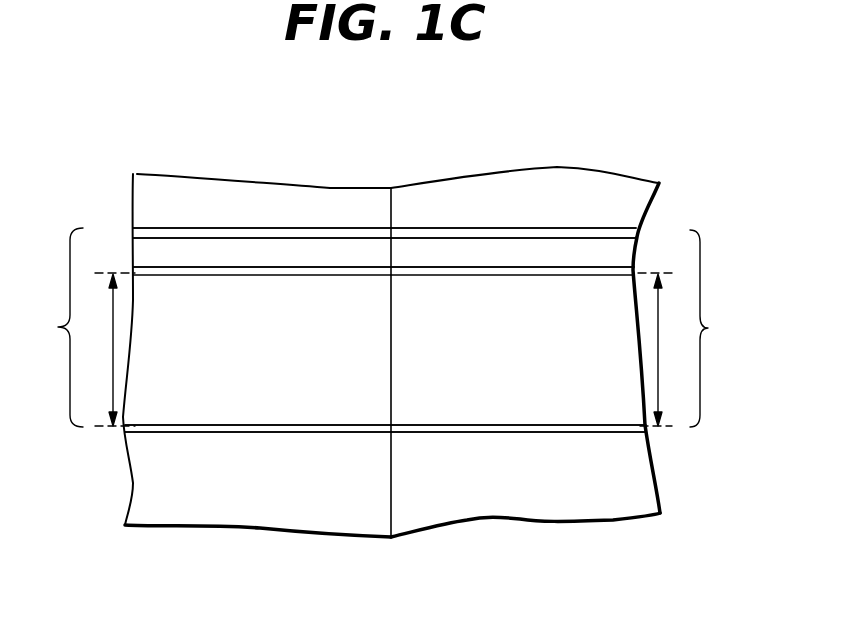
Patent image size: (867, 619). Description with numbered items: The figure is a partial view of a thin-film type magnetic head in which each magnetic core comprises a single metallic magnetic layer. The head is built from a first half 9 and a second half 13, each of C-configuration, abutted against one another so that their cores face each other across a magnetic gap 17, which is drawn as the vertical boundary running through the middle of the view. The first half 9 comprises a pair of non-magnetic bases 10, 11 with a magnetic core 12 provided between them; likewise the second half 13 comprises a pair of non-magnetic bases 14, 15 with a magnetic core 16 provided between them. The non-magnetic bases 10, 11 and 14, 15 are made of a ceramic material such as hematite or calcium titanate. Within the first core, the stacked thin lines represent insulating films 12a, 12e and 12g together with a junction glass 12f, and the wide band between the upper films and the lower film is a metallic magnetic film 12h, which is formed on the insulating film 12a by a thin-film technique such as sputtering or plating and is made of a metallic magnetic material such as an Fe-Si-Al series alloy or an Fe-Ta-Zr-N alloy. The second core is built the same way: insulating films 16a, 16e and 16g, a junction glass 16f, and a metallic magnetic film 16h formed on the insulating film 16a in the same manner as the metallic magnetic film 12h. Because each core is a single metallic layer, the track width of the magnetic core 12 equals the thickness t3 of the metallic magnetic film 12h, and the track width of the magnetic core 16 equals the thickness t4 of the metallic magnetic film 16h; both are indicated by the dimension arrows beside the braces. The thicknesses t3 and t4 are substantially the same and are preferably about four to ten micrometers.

The first half 9 is at (198, 532).
The non-magnetic base 10 is at (252, 513).
The non-magnetic base 11 is at (208, 198).
The magnetic core 12 is at (209, 330).
The insulating film 12a is at (162, 432).
The insulating film 12e is at (352, 267).
The junction glass 12f is at (277, 253).
The insulating film 12g is at (163, 237).
The metallic magnetic film 12h is at (318, 403).
The second half 13 is at (412, 535).
The non-magnetic base 14 is at (475, 498).
The non-magnetic base 15 is at (533, 187).
The magnetic core 16 is at (567, 330).
The insulating film 16a is at (587, 432).
The insulating film 16e is at (450, 262).
The junction glass 16f is at (602, 257).
The insulating film 16g is at (573, 231).
The metallic magnetic film 16h is at (537, 403).
The magnetic gap 17 is at (398, 210).
The thickness of metallic magnetic film t3 is at (107, 349).
The thickness of metallic magnetic film t4 is at (662, 349).